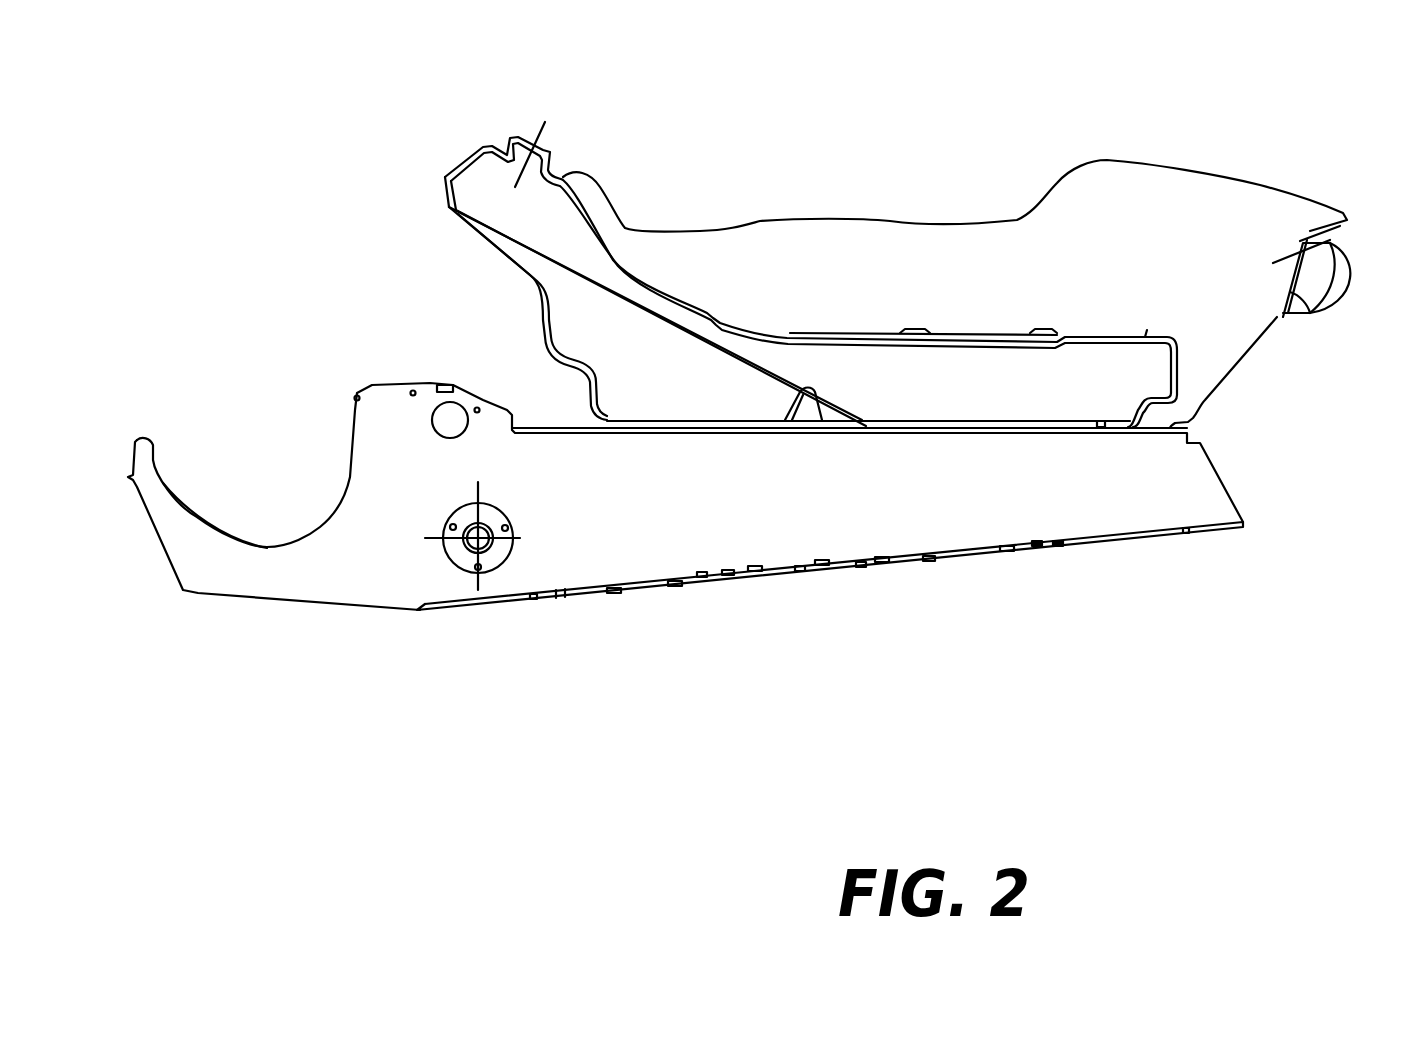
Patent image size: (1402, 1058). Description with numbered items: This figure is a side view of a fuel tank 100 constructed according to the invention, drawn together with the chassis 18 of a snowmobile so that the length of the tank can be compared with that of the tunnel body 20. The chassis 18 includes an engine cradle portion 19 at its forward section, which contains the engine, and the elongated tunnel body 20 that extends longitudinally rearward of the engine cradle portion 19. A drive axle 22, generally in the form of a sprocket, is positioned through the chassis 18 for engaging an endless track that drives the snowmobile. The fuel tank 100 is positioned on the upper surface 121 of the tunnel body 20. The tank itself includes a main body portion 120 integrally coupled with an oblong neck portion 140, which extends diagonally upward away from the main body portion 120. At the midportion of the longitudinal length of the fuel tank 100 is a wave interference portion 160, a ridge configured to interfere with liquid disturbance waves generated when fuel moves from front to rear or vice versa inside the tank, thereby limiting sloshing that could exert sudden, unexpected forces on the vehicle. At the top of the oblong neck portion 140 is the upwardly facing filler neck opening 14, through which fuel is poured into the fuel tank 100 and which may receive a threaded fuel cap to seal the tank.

The filler neck opening 14 is at (557, 153).
The oblong neck portion 140 is at (630, 260).
The fuel tank 100 is at (1047, 399).
The main body portion 120 is at (1145, 334).
The wave interference portion 160 is at (815, 396).
The tunnel body 20 is at (795, 519).
The engine cradle portion 19 is at (273, 512).
The drive axle 22 is at (493, 530).
The upper surface 121 is at (1053, 432).
The chassis 18 is at (622, 608).